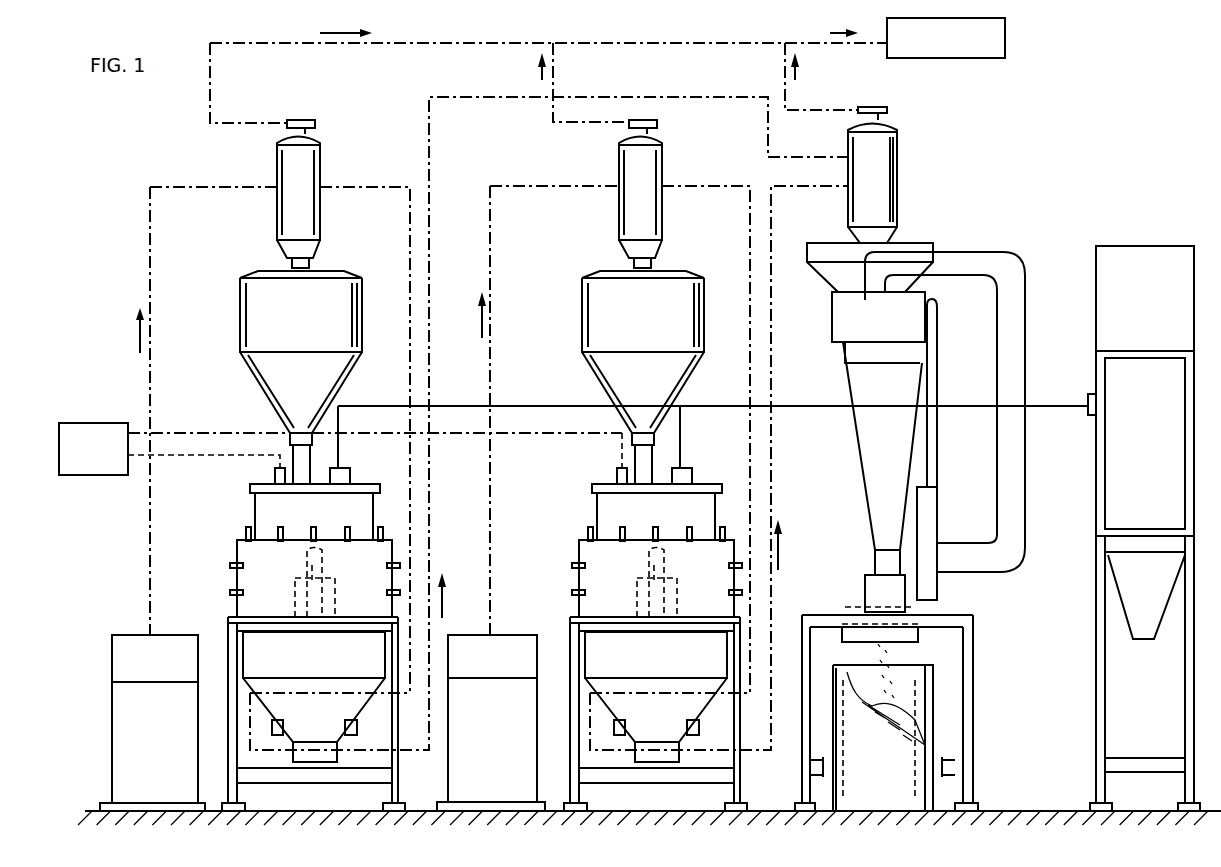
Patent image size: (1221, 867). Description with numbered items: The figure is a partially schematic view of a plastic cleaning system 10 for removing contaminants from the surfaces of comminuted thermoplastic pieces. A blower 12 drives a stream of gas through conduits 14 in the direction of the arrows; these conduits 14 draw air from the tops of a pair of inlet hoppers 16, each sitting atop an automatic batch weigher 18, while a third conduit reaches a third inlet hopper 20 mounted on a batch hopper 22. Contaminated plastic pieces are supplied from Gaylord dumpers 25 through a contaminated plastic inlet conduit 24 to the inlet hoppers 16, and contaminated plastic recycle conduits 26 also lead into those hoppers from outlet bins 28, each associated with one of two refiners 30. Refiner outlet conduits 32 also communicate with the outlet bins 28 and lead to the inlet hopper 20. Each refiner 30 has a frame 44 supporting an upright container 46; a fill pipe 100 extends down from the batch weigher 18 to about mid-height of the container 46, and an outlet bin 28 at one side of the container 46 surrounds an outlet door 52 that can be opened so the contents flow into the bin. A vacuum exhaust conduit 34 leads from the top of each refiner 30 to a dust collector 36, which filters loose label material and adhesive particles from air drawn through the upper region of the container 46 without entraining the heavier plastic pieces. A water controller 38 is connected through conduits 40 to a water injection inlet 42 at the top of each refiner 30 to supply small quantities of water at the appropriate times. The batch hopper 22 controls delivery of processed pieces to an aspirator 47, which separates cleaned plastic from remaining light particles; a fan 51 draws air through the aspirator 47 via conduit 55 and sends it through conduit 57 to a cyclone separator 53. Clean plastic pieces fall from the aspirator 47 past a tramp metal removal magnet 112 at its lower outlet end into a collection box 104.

The plastic cleaning system 10 is at (1037, 172).
The blower 12 is at (1005, 40).
The conduits 14 is at (836, 88).
The inlet hoppers 16 is at (708, 147).
The automatic batch weigher 18 is at (718, 298).
The third inlet hopper 20 is at (883, 185).
The batch hopper 22 is at (836, 250).
The contaminated plastic inlet conduit 24 is at (532, 267).
The Gaylord dumpers 25 is at (525, 618).
The contaminated plastic recycle conduits 26 is at (750, 242).
The outlet bins 28 is at (710, 722).
The refiners 30 is at (569, 538).
The refiner outlet conduits 32 is at (792, 596).
The vacuum exhaust conduit 34 is at (1032, 406).
The dust collector 36 is at (1095, 293).
The water controller 38 is at (88, 458).
The conduits 40 is at (197, 486).
The water injection inlet 42 is at (616, 476).
The frame 44 is at (764, 770).
The container 46 is at (595, 508).
The aspirator 47 is at (845, 540).
The fan 51 is at (932, 528).
The outlet door 52 is at (675, 595).
The cyclone separator 53 is at (858, 388).
The conduit 55 is at (1014, 312).
The conduit 57 is at (928, 430).
The fill pipe 100 is at (643, 468).
The collection box 104 is at (935, 702).
The tramp metal removal magnet 112 is at (880, 605).